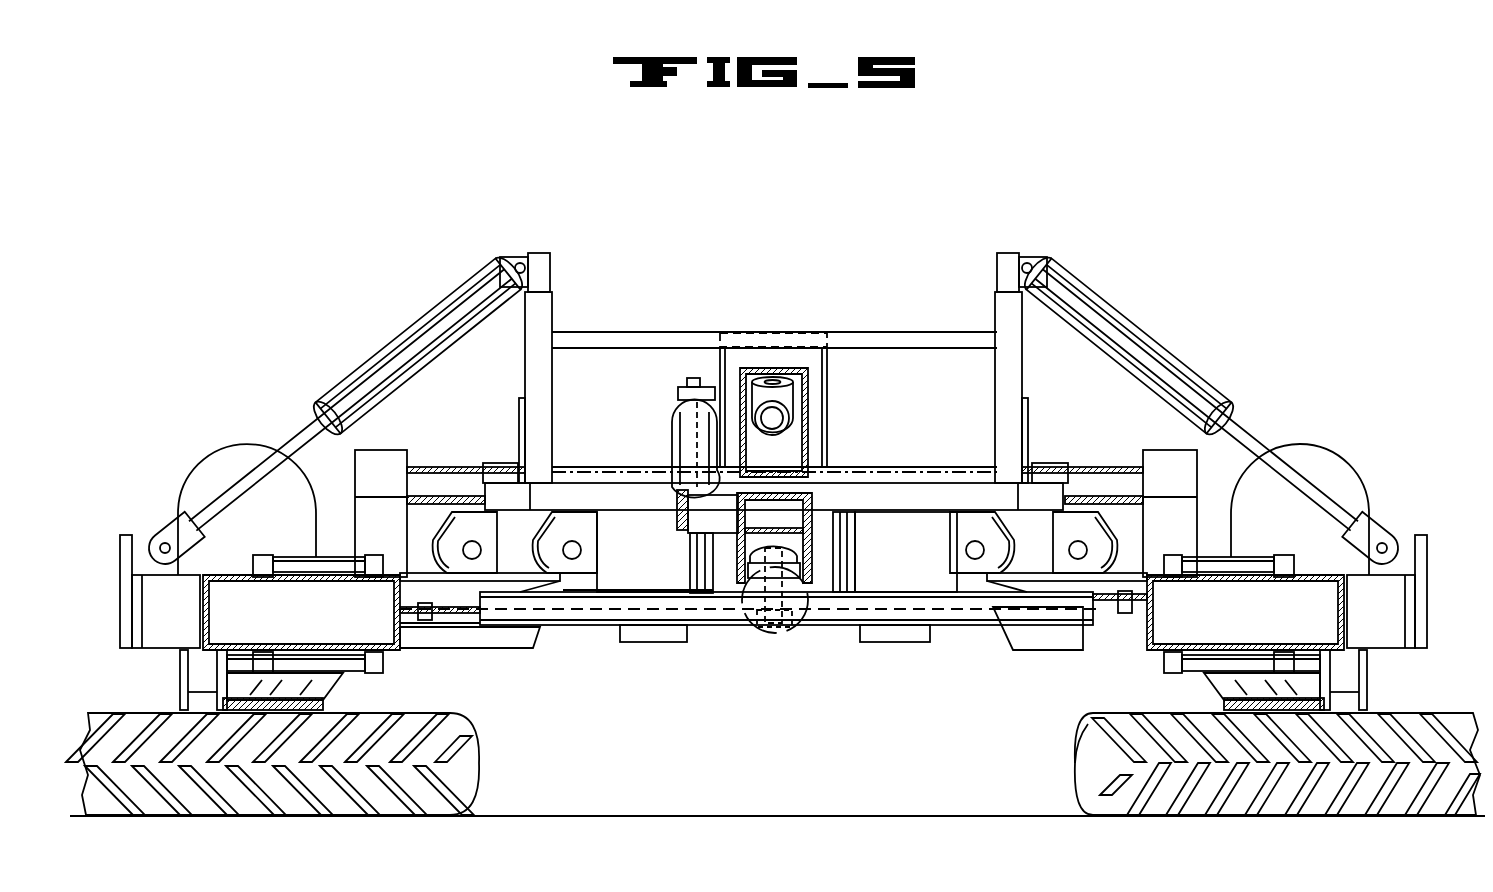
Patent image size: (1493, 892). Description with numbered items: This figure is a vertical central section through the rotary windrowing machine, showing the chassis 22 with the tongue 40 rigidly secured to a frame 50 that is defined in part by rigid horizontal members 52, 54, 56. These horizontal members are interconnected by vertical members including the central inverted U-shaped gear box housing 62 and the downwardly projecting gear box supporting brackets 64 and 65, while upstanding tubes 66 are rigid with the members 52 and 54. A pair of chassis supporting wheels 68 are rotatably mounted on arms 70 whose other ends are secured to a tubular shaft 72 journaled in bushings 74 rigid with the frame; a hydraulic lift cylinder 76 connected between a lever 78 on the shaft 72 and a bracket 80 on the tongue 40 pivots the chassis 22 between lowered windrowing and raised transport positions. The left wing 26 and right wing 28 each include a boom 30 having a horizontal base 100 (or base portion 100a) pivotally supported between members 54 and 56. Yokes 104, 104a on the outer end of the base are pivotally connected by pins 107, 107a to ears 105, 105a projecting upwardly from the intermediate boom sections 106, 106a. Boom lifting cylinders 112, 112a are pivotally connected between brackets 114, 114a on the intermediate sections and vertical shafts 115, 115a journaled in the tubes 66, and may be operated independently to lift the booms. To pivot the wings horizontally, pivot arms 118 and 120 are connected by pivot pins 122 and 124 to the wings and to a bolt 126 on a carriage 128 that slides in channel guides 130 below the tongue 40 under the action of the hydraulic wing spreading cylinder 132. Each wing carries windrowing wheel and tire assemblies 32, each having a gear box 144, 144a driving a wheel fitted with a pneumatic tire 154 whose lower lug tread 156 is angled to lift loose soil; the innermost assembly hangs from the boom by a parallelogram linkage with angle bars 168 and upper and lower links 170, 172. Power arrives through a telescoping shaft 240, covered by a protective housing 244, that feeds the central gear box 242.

The chassis 22 is at (960, 626).
The left wing 26 is at (1387, 651).
The right wing 28 is at (150, 654).
The boom 30 is at (390, 665).
The windrowing wheel and tire assembly 32 is at (478, 763).
The tongue 40 is at (813, 500).
The frame 50 is at (1030, 406).
The horizontal member 52 is at (850, 333).
The horizontal member 54 is at (922, 492).
The horizontal member 56 is at (850, 613).
The inverted U-shaped gear box housing 62 is at (828, 365).
The gear box supporting bracket 64 is at (652, 642).
The gear box supporting bracket 65 is at (885, 642).
The upstanding tube 66 is at (540, 304).
The chassis supporting wheel 68 is at (223, 456).
The arm 70 is at (358, 460).
The tubular shaft 72 is at (439, 467).
The bushing 74 is at (496, 463).
The hydraulic lift cylinder 76 is at (683, 421).
The lever 78 is at (688, 393).
The bracket 80 is at (733, 529).
The horizontal base 100 is at (907, 563).
The base portion 100a is at (673, 583).
The yoke 104 is at (1068, 528).
The yoke 104a is at (560, 573).
The ear 105 is at (1003, 584).
The ear 105a is at (560, 516).
The intermediate boom section 106 is at (1043, 641).
The intermediate boom section 106a is at (413, 648).
The pin 107 is at (1069, 549).
The pin 107a is at (462, 546).
The boom lifting cylinder 112 is at (1152, 340).
The boom lifting cylinder 112a is at (418, 323).
The bracket 114 is at (1413, 538).
The bracket 114a is at (134, 538).
The vertical shaft 115 is at (1000, 267).
The vertical shaft 115a is at (545, 268).
The pivot arm 118 is at (828, 603).
The pivot arm 120 is at (578, 616).
The pivot pin 122 is at (1125, 613).
The pivot pin 124 is at (412, 616).
The bolt 126 is at (775, 552).
The carriage 128 is at (800, 571).
The channel guide 130 is at (748, 620).
The hydraulic wing spreading cylinder 132 is at (755, 556).
The gear box 144 is at (1345, 690).
The gear box 144a is at (190, 677).
The pneumatic tire 154 is at (1074, 759).
The lug tread 156 is at (1132, 797).
The angle bar 168 is at (1292, 565).
The upper link 170 is at (1243, 558).
The lower link 172 is at (1216, 682).
The telescoping shaft 240 is at (790, 414).
The central gear box 242 is at (813, 388).
The protective housing 244 is at (810, 440).